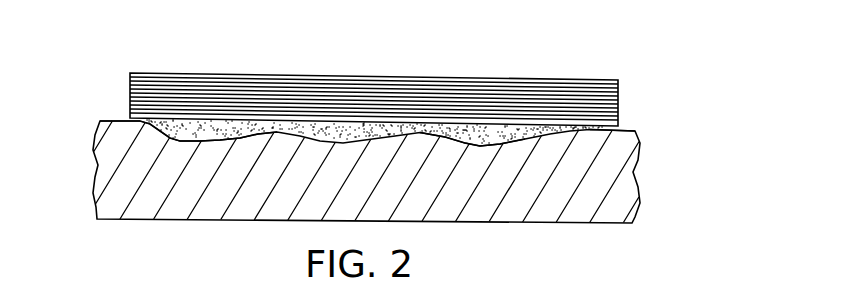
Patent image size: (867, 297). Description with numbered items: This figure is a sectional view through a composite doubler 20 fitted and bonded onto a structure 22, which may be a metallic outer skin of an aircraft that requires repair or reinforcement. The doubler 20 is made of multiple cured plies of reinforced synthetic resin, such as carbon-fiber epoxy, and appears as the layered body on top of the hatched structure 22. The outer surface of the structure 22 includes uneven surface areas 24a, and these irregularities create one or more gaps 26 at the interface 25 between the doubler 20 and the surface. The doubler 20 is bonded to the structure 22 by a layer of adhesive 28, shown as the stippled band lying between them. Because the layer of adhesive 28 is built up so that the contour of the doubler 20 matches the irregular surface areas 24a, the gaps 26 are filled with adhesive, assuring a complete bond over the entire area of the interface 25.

The composite doubler 20 is at (585, 100).
The structure 22 is at (605, 193).
The uneven surface areas 24a is at (480, 144).
The interface 25 is at (138, 121).
The gaps 26 is at (338, 132).
The layer of adhesive 28 is at (207, 130).